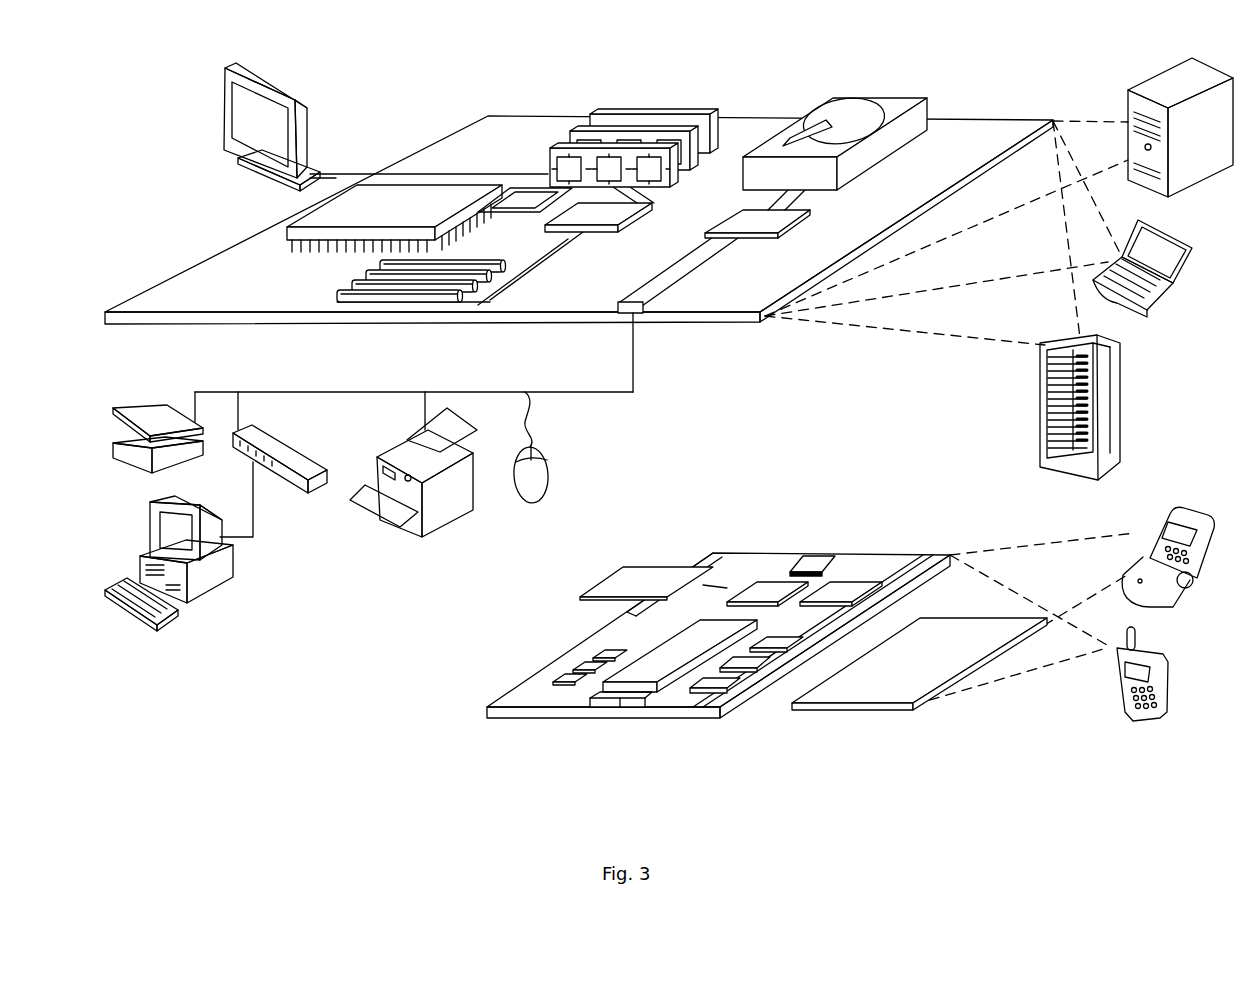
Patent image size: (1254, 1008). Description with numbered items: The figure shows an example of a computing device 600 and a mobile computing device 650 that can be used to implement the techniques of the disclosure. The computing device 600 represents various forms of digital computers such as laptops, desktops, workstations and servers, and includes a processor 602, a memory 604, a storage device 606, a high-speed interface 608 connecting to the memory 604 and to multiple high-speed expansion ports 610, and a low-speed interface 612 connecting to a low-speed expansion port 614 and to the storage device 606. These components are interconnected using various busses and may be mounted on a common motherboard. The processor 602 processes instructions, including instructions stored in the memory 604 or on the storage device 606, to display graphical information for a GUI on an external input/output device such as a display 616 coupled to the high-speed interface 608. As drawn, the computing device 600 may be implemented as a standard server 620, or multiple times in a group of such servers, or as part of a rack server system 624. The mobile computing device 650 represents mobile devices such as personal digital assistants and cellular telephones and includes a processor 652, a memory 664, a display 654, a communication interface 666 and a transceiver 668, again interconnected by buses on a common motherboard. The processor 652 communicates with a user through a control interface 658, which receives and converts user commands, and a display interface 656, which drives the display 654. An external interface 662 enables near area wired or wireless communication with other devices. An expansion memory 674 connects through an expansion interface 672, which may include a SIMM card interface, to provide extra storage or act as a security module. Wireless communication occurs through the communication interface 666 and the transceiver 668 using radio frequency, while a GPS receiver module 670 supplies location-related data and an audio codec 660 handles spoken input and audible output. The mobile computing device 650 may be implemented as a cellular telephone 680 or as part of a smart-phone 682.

The computing device 600 is at (408, 88).
The processor 602 is at (292, 232).
The memory 604 is at (605, 118).
The storage device 606 is at (820, 105).
The high-speed interface 608 is at (562, 212).
The high-speed expansion ports 610 is at (346, 292).
The low-speed interface 612 is at (738, 218).
The low-speed expansion port 614 is at (643, 316).
The display 616 is at (238, 68).
The standard server 620 is at (1128, 106).
The rack server system 624 is at (1045, 430).
The mobile computing device 650 is at (462, 719).
The processor 652 is at (653, 676).
The display 654 is at (880, 692).
The display interface 656 is at (721, 684).
The control interface 658 is at (752, 664).
The audio codec 660 is at (776, 646).
The external interface 662 is at (618, 700).
The memory 664 is at (556, 673).
The communication interface 666 is at (770, 591).
The transceiver 668 is at (846, 591).
The GPS receiver module 670 is at (821, 558).
The expansion interface 672 is at (703, 568).
The expansion memory 674 is at (622, 566).
The cellular telephone 680 is at (1133, 522).
The smart-phone 682 is at (1115, 680).